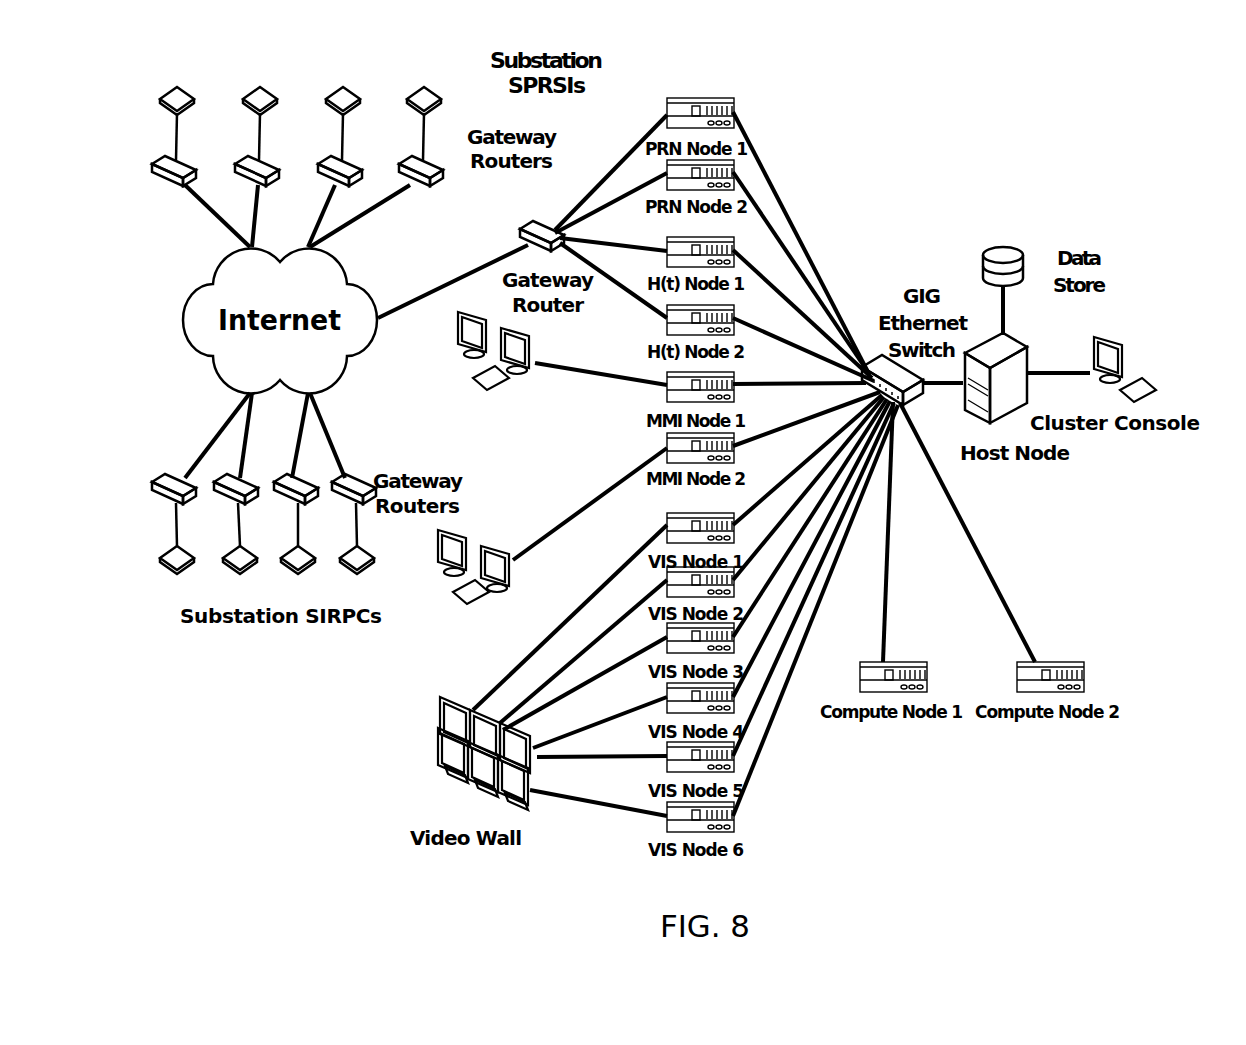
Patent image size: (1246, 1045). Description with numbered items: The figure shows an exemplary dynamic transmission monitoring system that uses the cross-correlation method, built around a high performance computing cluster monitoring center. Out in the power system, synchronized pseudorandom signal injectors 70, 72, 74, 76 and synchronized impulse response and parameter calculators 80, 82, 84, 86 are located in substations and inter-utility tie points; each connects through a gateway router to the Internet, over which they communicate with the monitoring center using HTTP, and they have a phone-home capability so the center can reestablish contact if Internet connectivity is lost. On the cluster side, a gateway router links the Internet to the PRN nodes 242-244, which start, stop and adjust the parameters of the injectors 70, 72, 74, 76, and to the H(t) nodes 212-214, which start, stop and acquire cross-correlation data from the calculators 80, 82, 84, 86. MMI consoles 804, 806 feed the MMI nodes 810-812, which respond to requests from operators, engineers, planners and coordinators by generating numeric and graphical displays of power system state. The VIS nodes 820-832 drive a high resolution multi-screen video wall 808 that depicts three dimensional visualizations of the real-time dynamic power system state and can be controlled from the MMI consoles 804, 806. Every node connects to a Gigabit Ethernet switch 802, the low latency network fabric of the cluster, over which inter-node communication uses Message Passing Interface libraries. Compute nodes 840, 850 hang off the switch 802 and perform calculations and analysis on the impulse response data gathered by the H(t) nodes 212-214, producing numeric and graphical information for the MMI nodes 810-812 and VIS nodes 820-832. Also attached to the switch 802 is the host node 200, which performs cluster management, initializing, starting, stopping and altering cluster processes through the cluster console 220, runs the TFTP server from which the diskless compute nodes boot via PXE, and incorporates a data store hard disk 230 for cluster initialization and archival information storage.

The synchronized pseudorandom signal injector 70 is at (183, 85).
The synchronized pseudorandom signal injector 72 is at (265, 85).
The synchronized pseudorandom signal injector 74 is at (348, 85).
The synchronized pseudorandom signal injector 76 is at (430, 85).
The synchronized impulse response and parameter calculator 80 is at (160, 556).
The synchronized impulse response and parameter calculator 82 is at (233, 570).
The synchronized impulse response and parameter calculator 84 is at (305, 572).
The synchronized impulse response and parameter calculator 86 is at (363, 572).
The host node 200 is at (1017, 468).
The cluster console 220 is at (1142, 437).
The data store hard disk 230 is at (1020, 252).
The PRN nodes 242-244 is at (705, 97).
The H(t) nodes 212-214 is at (680, 237).
The MMI nodes 810-812 is at (705, 372).
The VIS nodes 820-832 is at (673, 513).
The Gigabit Ethernet switch 802 is at (923, 280).
The MMI console 804 is at (518, 382).
The MMI console 806 is at (483, 543).
The video wall 808 is at (437, 757).
The compute node 840 is at (900, 662).
The compute node 850 is at (1057, 662).